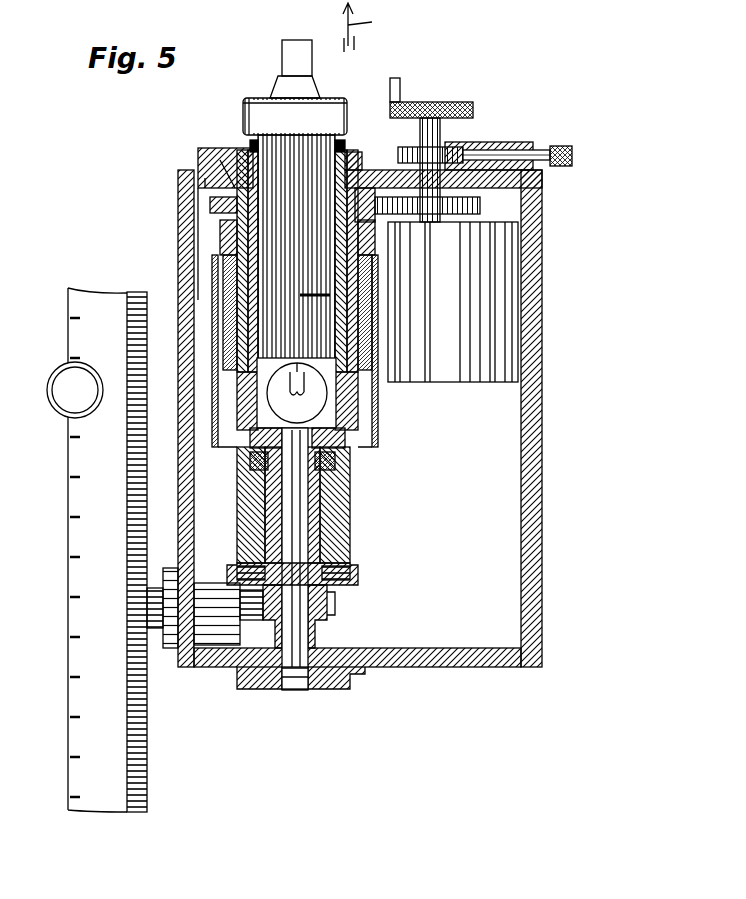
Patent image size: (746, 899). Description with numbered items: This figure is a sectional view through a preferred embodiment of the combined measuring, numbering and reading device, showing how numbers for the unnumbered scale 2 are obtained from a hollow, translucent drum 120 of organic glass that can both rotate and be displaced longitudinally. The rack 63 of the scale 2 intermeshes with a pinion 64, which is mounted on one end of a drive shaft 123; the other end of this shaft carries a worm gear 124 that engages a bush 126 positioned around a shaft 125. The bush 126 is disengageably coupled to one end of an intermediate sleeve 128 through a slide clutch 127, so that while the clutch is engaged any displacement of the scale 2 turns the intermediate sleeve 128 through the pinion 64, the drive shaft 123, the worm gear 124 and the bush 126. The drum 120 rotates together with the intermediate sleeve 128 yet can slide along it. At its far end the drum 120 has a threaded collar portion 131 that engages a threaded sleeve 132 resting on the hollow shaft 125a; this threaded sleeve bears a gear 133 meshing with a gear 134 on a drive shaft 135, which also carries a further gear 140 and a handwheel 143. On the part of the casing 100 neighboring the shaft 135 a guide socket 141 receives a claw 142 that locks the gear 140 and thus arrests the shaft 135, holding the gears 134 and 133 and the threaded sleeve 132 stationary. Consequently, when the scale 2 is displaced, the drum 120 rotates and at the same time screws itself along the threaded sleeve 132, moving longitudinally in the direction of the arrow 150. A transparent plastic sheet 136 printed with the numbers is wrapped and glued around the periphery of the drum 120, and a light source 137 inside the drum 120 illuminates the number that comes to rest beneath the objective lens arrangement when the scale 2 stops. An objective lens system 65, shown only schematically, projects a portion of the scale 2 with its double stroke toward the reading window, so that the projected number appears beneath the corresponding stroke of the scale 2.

The scale 2 is at (98, 800).
The rack 63 is at (145, 773).
The pinion 64 is at (140, 608).
The objective lens system 65 is at (60, 405).
The casing 100 is at (526, 588).
The drum 120 is at (370, 418).
The drive shaft 123 is at (170, 620).
The worm gear 124 is at (232, 670).
The shaft 125 is at (312, 480).
The hollow shaft 125a is at (200, 158).
The bush 126 is at (270, 508).
The slide clutch 127 is at (236, 560).
The intermediate sleeve 128 is at (335, 540).
The threaded collar portion 131 is at (220, 236).
The threaded sleeve 132 is at (235, 278).
The gear 133 is at (210, 206).
The gear 134 is at (480, 205).
The drive shaft 135 is at (430, 182).
The transparent plastic sheet 136 is at (213, 308).
The light source 137 is at (310, 395).
The gear 140 is at (452, 152).
The guide socket 141 is at (515, 142).
The claw 142 is at (568, 146).
The handwheel 143 is at (437, 102).
The arrow 150 is at (360, 28).